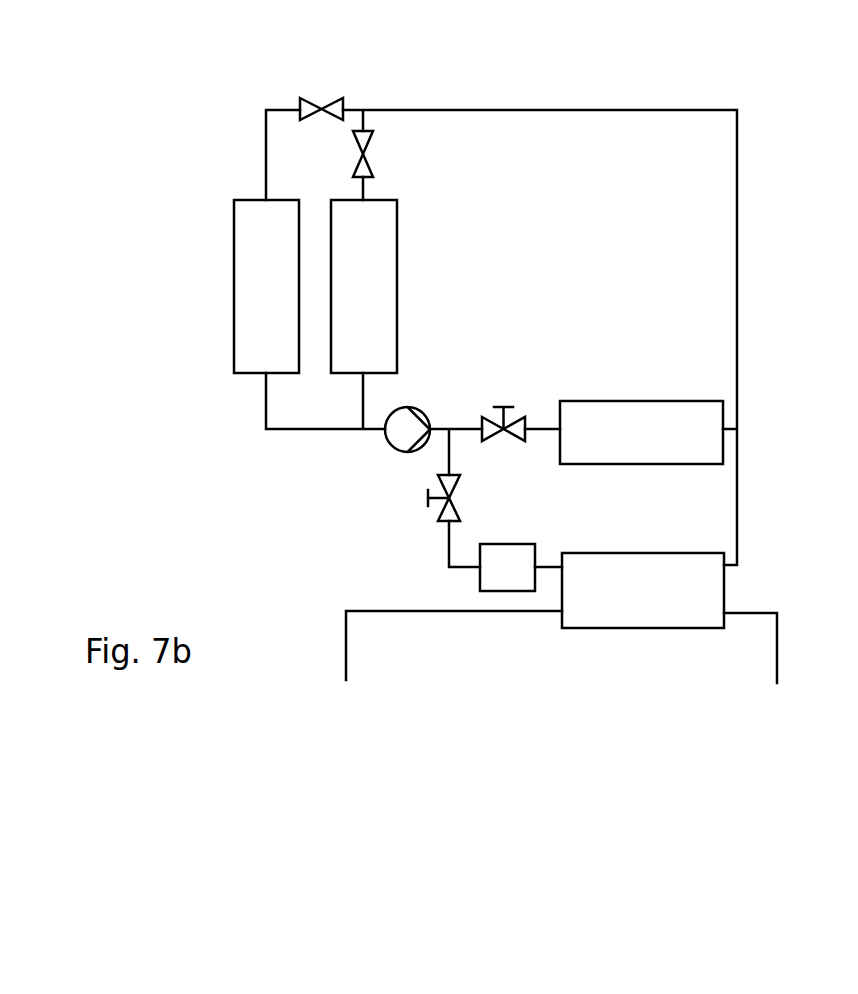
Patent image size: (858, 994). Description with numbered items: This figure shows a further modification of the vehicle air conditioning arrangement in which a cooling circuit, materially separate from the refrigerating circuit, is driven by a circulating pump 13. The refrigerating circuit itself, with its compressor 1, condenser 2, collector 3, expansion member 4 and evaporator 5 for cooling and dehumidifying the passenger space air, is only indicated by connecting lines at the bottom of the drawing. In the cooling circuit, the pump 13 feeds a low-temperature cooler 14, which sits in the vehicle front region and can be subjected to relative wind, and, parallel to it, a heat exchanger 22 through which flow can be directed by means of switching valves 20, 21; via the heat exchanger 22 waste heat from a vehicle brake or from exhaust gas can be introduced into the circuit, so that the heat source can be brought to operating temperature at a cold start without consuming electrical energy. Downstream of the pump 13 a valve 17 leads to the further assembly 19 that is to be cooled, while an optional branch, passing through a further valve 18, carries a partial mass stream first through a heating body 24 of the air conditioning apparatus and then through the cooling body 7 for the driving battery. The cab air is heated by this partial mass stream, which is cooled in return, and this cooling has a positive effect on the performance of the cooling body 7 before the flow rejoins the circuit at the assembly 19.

The compressor 1 is at (599, 670).
The condenser 2 is at (561, 647).
The collector 3 is at (561, 647).
The expansion member 4 is at (561, 647).
The evaporator 5 is at (561, 647).
The cooling body 7 is at (638, 598).
The circulating pump 13 is at (385, 442).
The low-temperature cooler 14 is at (257, 291).
The valve 17 is at (517, 420).
The valve 18 is at (458, 507).
The assembly 19 is at (629, 446).
The switching valve 20 is at (337, 100).
The switching valve 21 is at (367, 146).
The heat exchanger 22 is at (348, 291).
The heating body 24 is at (494, 581).